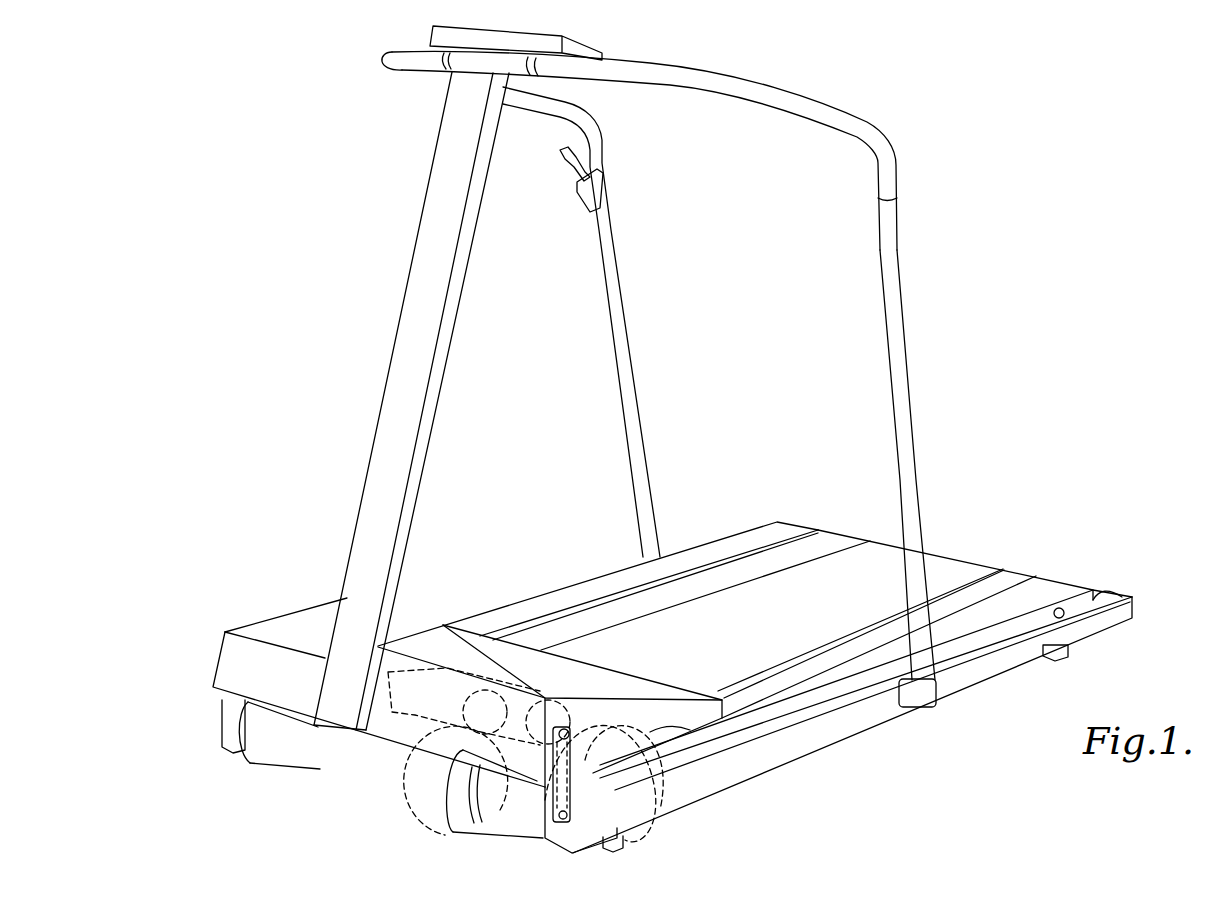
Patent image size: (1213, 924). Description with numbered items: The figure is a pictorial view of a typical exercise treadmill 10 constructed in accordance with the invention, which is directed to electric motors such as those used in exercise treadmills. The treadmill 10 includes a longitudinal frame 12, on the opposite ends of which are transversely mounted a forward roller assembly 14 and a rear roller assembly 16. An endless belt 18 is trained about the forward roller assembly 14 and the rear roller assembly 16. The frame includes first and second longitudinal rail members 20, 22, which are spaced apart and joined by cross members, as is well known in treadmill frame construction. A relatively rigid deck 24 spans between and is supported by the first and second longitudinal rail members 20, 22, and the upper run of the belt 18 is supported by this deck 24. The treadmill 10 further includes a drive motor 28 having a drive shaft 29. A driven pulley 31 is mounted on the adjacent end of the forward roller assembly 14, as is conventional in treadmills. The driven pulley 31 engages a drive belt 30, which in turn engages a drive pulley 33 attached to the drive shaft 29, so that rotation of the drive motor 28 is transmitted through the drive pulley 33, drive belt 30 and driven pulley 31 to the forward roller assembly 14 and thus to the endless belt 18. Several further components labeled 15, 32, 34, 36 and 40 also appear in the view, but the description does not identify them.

The exercise treadmill 10 is at (1064, 196).
The longitudinal frame 12 is at (776, 776).
The forward roller assembly 14 is at (283, 752).
The side member 15 is at (385, 720).
The rear roller assembly 16 is at (1098, 590).
The endless belt 18 is at (970, 572).
The first longitudinal rail member 20 is at (830, 730).
The second longitudinal rail member 22 is at (236, 748).
The deck 24 is at (727, 575).
The drive motor 28 is at (432, 790).
The drive shaft 29 is at (618, 830).
The drive belt 30 is at (535, 805).
The driven pulley 31 is at (552, 840).
The drive pulley 32 is at (463, 792).
The drive pulley 33 is at (660, 810).
The drive motor 34 is at (430, 717).
The motor cover 36 is at (447, 670).
The drive shaft 40 is at (560, 700).